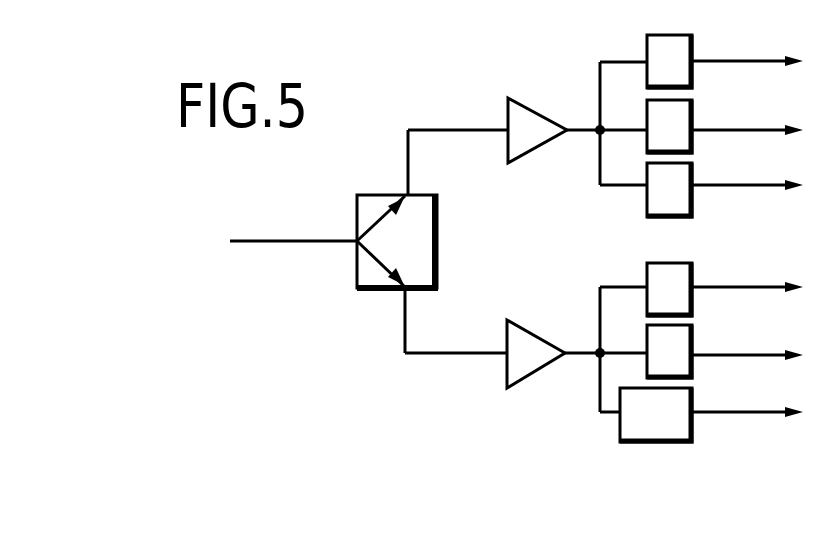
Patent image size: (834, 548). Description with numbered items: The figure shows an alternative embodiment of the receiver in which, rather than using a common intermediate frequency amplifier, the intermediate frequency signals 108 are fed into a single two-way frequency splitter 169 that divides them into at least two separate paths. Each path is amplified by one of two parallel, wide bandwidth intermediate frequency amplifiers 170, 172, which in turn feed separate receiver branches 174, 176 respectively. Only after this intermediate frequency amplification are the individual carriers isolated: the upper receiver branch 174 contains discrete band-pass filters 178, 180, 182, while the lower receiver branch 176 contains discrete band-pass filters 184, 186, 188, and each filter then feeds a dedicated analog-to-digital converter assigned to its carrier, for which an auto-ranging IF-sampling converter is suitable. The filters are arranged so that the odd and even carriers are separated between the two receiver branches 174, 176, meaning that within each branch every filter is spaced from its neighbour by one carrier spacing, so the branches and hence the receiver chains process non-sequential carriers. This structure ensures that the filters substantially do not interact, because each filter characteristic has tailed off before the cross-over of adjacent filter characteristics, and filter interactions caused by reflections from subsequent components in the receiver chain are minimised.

The intermediate frequency signals 108 is at (268, 241).
The two-way frequency splitter 169 is at (437, 230).
The intermediate frequency amplifier 170 is at (533, 110).
The intermediate frequency amplifier 172 is at (527, 363).
The receiver branch 174 is at (583, 133).
The receiver branch 176 is at (577, 347).
The band-pass filter 178 is at (682, 35).
The band-pass filter 180 is at (692, 115).
The band-pass filter 182 is at (692, 200).
The band-pass filter 184 is at (680, 272).
The band-pass filter 186 is at (692, 337).
The band-pass filter 188 is at (682, 422).